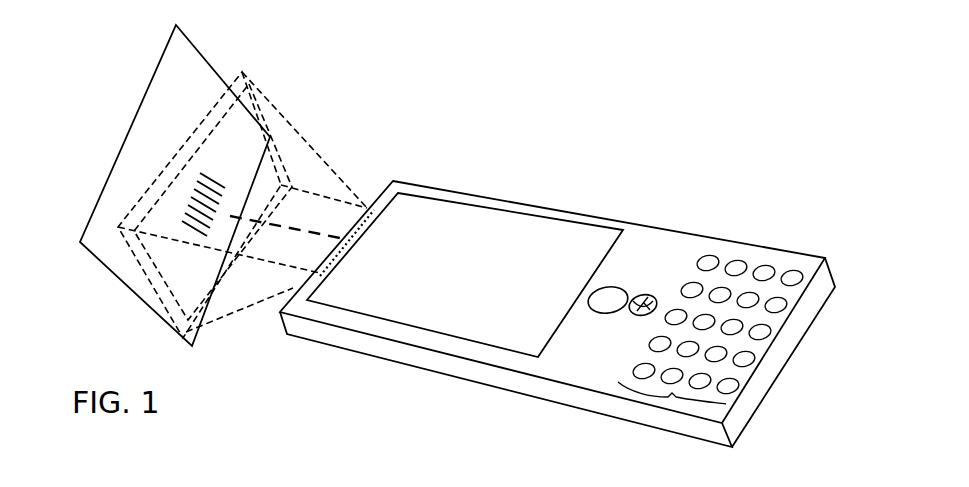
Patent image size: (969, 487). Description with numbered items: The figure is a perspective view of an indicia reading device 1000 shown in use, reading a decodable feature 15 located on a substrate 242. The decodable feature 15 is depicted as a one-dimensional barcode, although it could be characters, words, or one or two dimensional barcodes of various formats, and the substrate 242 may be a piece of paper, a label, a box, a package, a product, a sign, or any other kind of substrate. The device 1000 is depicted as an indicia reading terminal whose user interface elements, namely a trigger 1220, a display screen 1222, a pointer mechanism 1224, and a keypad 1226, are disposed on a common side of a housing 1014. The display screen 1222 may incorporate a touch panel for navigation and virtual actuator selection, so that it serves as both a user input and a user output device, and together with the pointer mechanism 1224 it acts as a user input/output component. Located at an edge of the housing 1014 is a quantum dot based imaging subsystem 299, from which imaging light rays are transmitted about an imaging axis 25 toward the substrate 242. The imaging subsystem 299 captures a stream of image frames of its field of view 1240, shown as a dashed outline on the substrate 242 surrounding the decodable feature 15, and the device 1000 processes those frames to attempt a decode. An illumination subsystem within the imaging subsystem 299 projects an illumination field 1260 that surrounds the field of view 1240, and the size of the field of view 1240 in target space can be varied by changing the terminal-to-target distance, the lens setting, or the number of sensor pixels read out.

The indicia reading device 1000 is at (742, 88).
The housing 1014 is at (663, 242).
The display screen 1222 is at (522, 213).
The trigger 1220 is at (593, 312).
The pointer mechanism 1224 is at (632, 313).
The keypad 1226 is at (672, 397).
The quantum dot based imaging subsystem 299 is at (368, 208).
The imaging axis 25 is at (295, 229).
The decodable feature 15 is at (218, 182).
The substrate 242 is at (142, 100).
The field of view 1240 is at (140, 203).
The illumination field 1260 is at (151, 188).